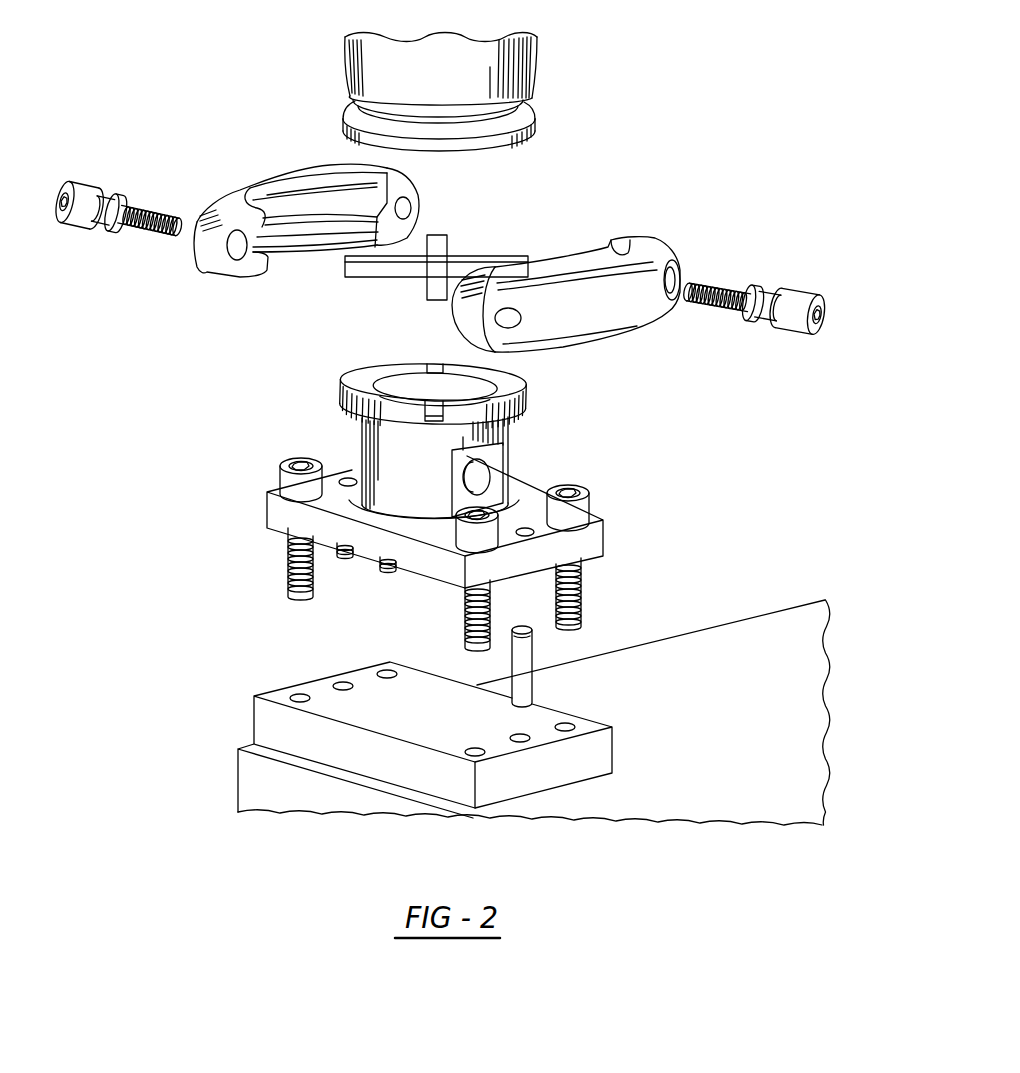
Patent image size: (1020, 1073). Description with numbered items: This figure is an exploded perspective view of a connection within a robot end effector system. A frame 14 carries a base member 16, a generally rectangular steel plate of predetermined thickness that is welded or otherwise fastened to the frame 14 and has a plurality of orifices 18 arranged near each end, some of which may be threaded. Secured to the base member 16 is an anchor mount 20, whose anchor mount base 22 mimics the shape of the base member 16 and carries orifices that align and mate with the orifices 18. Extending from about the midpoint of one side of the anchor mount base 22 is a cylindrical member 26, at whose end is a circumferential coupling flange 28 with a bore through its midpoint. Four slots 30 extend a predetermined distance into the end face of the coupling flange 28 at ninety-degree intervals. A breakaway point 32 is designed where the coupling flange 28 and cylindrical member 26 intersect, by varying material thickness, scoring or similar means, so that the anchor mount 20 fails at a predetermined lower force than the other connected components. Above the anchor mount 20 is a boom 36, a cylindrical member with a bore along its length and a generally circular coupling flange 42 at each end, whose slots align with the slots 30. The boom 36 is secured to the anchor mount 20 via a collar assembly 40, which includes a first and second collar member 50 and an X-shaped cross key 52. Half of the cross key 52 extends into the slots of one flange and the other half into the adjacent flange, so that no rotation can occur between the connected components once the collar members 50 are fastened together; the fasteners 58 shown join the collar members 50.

The frame 14 is at (718, 625).
The base member 16 is at (248, 718).
The orifices 18 is at (387, 672).
The anchor mount 20 is at (598, 458).
The anchor mount base 22 is at (548, 552).
The cylindrical member 26 is at (362, 443).
The coupling flange 28 is at (502, 375).
The slots 30 is at (431, 416).
The breakaway point 32 is at (504, 420).
The boom 36 is at (536, 60).
The collar assembly 40 is at (723, 120).
The coupling flange 42 is at (536, 120).
The collar member 50 is at (265, 170).
The cross key 52 is at (485, 256).
The bolt 58 is at (150, 204).